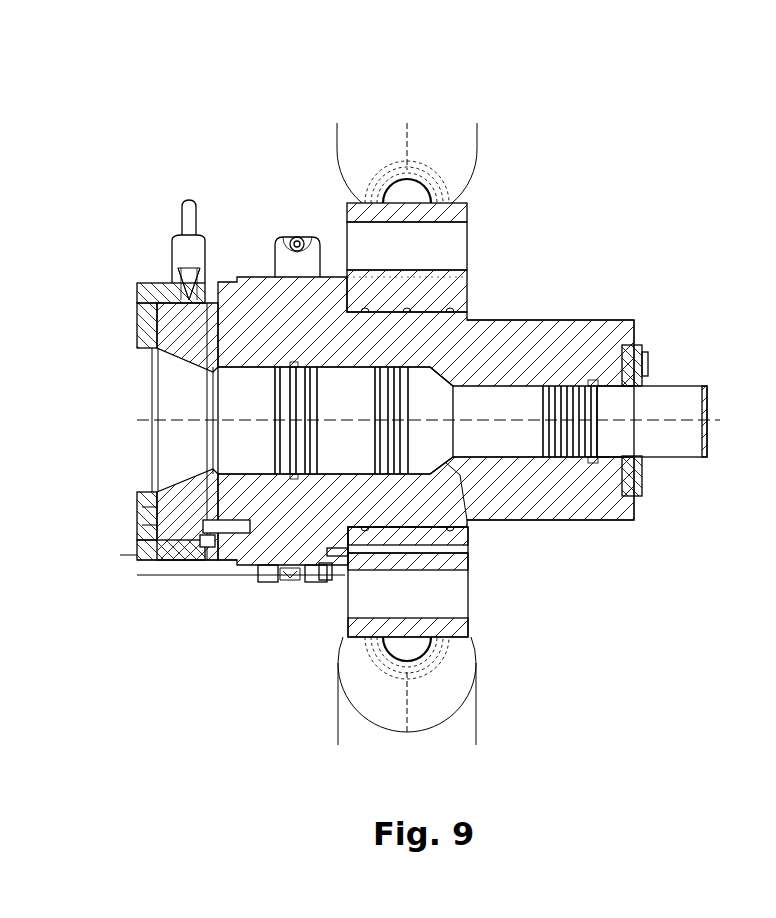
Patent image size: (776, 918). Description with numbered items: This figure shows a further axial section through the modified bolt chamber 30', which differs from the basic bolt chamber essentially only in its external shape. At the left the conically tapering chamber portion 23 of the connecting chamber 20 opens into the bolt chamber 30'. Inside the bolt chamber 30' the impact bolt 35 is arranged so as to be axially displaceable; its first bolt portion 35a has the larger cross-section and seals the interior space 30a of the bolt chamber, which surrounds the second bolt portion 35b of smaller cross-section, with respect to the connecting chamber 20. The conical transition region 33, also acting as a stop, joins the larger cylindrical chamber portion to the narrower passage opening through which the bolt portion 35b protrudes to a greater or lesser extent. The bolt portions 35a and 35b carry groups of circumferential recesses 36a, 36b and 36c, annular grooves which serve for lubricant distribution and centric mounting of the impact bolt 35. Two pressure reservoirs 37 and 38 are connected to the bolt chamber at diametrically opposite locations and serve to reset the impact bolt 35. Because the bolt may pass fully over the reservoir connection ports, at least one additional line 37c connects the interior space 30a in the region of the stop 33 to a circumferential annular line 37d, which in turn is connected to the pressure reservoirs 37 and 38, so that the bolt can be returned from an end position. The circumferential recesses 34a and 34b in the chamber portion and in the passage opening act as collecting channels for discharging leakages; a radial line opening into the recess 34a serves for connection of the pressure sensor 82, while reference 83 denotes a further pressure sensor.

The connecting chamber 20 is at (145, 275).
The conically tapering chamber portion 23 is at (188, 370).
The bolt chamber 30' is at (523, 204).
The interior space 30a is at (455, 385).
The transition region 33 is at (480, 322).
The circumferential recess 34a is at (297, 365).
The circumferential recess 34b is at (605, 468).
The impact bolt 35 is at (689, 381).
The first bolt portion 35a is at (332, 458).
The second bolt portion 35b is at (657, 393).
The circumferential recesses 36a is at (285, 405).
The circumferential recesses 36b is at (385, 405).
The circumferential recesses 36c is at (603, 405).
The pressure reservoir 37 is at (358, 146).
The line 37c is at (452, 463).
The circumferential annular line 37d is at (392, 530).
The pressure reservoir 38 is at (460, 678).
The pressure sensor 82 is at (297, 237).
The pressure sensor 83 is at (190, 200).